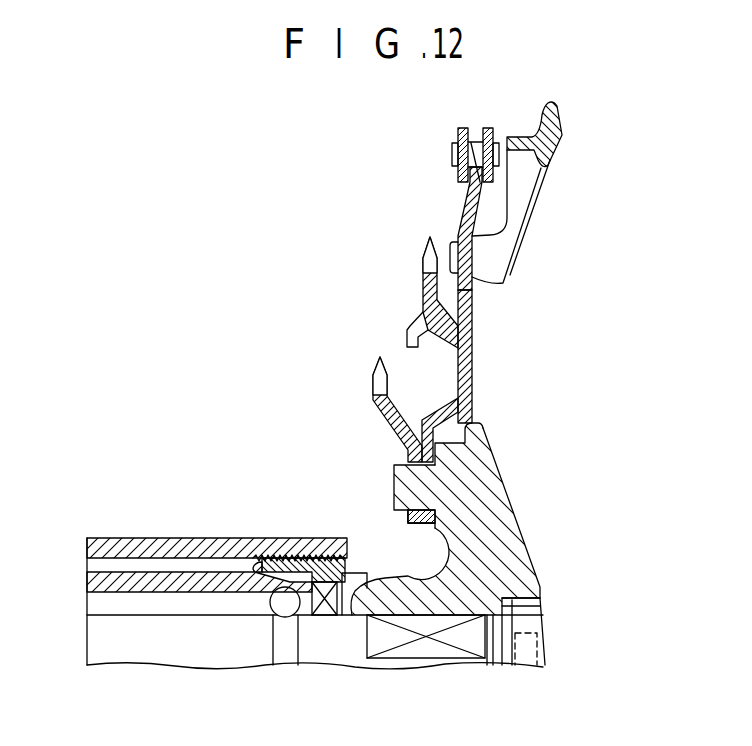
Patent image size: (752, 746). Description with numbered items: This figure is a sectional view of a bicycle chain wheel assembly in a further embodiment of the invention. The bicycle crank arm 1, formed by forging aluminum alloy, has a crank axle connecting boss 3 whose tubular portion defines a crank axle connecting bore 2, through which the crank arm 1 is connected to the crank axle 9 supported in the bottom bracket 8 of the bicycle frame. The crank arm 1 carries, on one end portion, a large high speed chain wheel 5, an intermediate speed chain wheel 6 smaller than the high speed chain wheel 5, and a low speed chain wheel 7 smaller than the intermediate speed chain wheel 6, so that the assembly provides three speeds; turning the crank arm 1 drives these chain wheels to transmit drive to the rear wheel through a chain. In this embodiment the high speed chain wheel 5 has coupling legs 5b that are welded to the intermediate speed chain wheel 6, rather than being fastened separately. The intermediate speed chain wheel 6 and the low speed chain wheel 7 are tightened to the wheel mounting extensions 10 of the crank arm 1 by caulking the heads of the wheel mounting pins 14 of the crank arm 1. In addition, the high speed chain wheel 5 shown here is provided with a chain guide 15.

The bicycle crank arm 1 is at (541, 590).
The crank axle connecting bore 2 is at (487, 621).
The crank axle connecting boss 3 is at (398, 577).
The high speed chain wheel 5 is at (460, 203).
The coupling legs 5b is at (473, 360).
The intermediate speed chain wheel 6 is at (421, 290).
The low speed chain wheel 7 is at (373, 398).
The bottom bracket 8 is at (232, 536).
The crank axle 9 is at (88, 640).
The wheel mounting extensions 10 is at (488, 443).
The wheel mounting pins 14 is at (402, 478).
The chain guide 15 is at (563, 137).